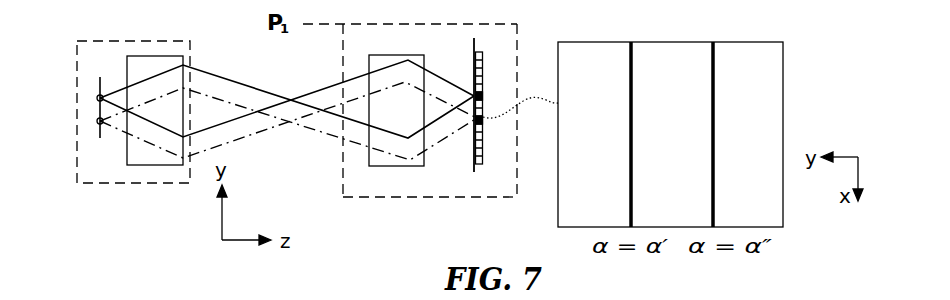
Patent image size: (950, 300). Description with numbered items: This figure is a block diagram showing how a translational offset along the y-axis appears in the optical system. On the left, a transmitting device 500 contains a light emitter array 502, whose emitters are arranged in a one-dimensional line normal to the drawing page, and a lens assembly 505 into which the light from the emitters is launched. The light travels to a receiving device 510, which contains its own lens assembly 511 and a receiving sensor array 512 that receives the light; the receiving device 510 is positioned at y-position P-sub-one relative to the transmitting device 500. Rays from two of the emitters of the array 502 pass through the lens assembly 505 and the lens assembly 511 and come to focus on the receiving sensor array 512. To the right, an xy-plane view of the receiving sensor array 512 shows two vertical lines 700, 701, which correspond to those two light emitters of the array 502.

The transmitting device 500 is at (90, 185).
The light emitter array 502 is at (100, 84).
The lens assembly 505 is at (153, 167).
The receiving device 510 is at (517, 28).
The lens assembly 511 is at (410, 167).
The receiving sensor array 512 is at (474, 172).
The vertical line 700 is at (633, 98).
The vertical line 701 is at (712, 130).